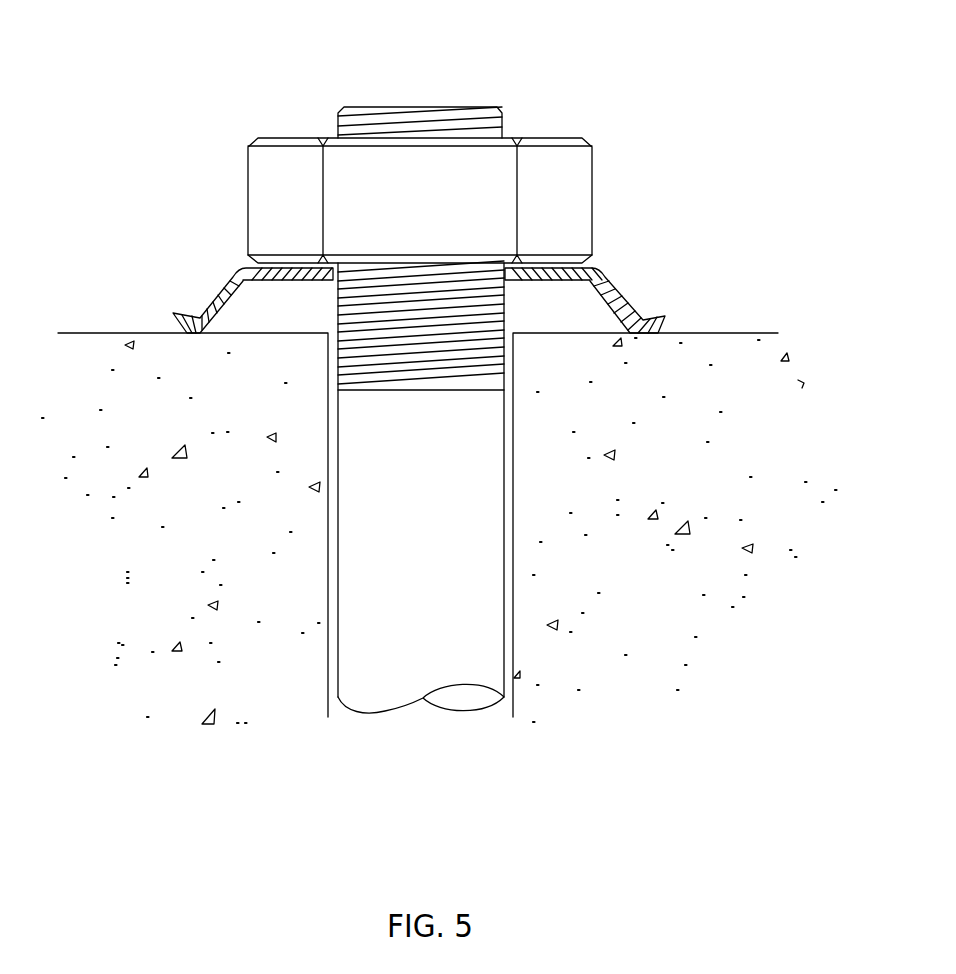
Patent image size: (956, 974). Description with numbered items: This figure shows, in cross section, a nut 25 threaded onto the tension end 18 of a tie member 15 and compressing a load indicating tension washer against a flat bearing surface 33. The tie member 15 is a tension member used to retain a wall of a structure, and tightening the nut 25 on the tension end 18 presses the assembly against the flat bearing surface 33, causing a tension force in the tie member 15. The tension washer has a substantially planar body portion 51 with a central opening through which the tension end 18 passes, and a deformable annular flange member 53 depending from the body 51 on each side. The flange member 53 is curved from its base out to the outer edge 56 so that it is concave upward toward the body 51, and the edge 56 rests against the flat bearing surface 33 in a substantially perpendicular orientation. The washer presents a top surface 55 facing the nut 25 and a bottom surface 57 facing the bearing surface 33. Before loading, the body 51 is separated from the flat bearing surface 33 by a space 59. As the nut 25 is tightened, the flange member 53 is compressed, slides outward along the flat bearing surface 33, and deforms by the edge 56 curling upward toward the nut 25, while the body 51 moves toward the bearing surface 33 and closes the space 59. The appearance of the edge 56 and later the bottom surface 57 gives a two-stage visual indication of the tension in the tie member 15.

The tie member 15 is at (417, 550).
The tension end 18 is at (460, 107).
The nut 25 is at (592, 181).
The flat bearing surface 33 is at (707, 333).
The body portion 51 is at (596, 266).
The deformable annular flange member 53 is at (622, 293).
The top surface 55 is at (218, 298).
The edge 56 is at (173, 318).
The bottom surface 57 is at (224, 304).
The space 59 is at (563, 310).